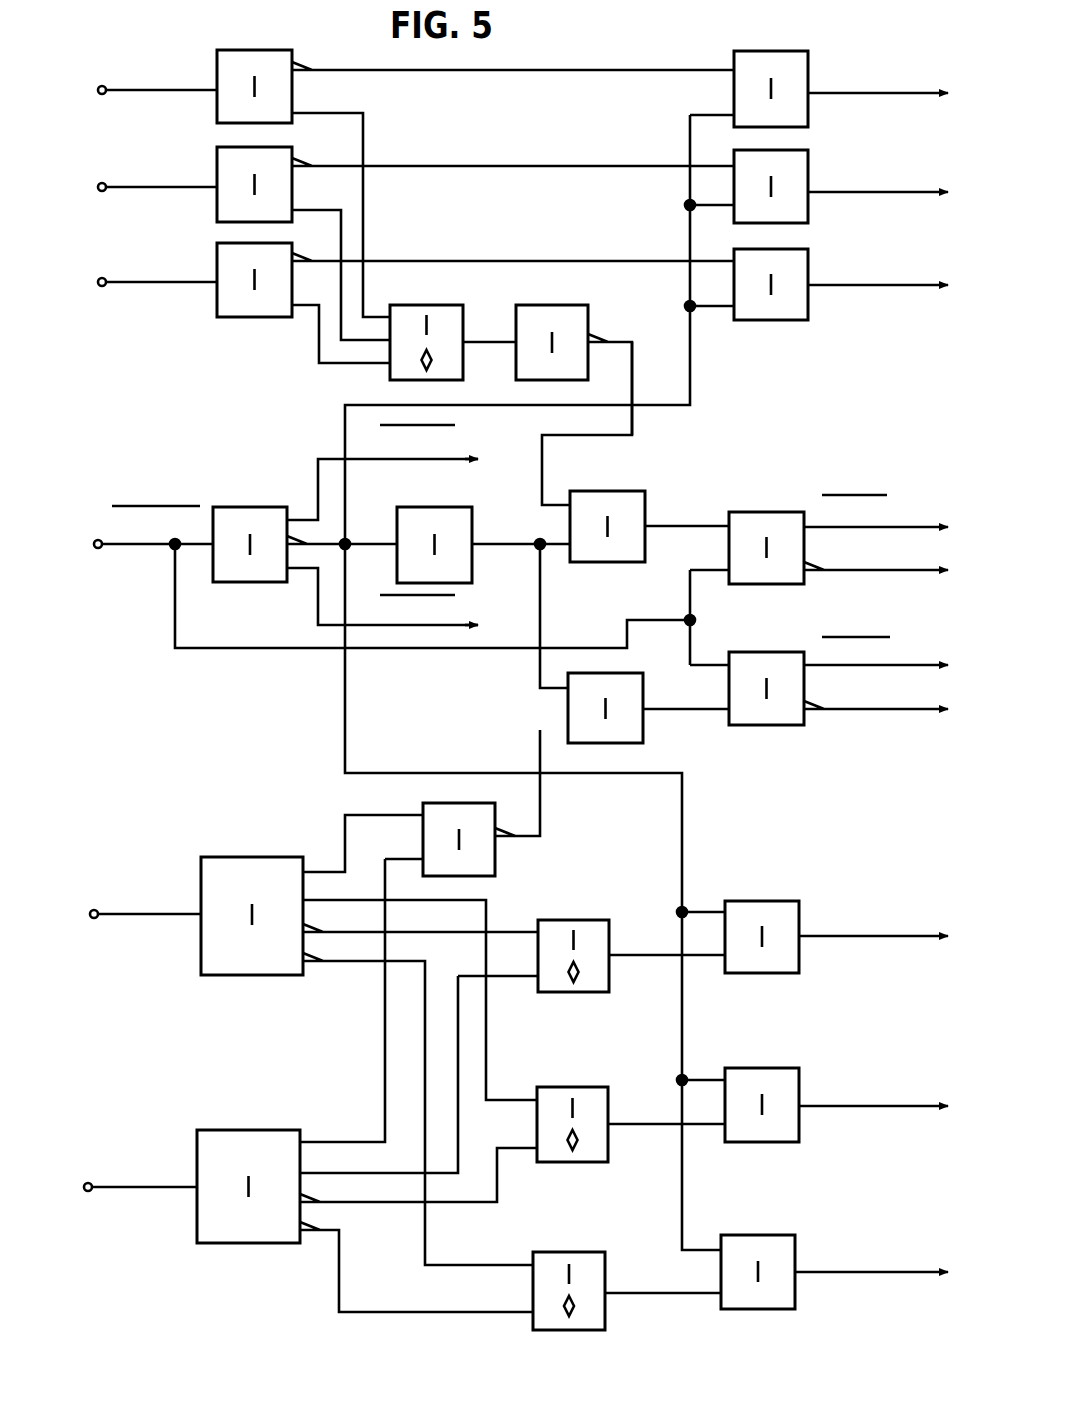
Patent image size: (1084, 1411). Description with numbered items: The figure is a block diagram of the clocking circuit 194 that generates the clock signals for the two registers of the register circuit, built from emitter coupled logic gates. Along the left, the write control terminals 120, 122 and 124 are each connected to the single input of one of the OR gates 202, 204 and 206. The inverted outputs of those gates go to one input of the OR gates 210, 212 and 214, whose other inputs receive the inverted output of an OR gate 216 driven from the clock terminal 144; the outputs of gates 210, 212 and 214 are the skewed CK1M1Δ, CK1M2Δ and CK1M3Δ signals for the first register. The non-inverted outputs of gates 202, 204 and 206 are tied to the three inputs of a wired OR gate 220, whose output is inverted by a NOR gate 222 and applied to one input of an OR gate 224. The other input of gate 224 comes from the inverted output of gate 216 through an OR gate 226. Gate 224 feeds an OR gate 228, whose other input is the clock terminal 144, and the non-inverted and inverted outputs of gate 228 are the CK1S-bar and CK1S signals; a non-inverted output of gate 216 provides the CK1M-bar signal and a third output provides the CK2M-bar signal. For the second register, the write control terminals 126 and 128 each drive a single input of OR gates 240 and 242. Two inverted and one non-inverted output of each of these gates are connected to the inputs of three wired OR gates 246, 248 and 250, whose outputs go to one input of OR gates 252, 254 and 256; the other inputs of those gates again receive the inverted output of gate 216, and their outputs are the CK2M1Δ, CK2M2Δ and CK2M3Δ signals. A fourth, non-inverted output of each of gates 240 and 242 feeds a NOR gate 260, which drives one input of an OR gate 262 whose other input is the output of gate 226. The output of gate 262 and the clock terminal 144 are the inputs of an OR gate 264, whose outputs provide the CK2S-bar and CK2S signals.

The clocking circuit 194 is at (268, 1278).
The write control terminal 120 is at (101, 94).
The write control terminal 122 is at (101, 191).
The write control terminal 124 is at (101, 286).
The write control terminal 126 is at (93, 918).
The write control terminal 128 is at (87, 1191).
The clock terminal 144 is at (97, 548).
The OR gate 202 is at (292, 90).
The OR gate 204 is at (292, 187).
The OR gate 206 is at (275, 317).
The OR gate 210 is at (734, 93).
The OR gate 212 is at (734, 183).
The OR gate 214 is at (785, 320).
The OR gate 216 is at (262, 507).
The wired OR gate 220 is at (448, 305).
The NOR gate 222 is at (535, 305).
The OR gate 224 is at (607, 491).
The OR gate 226 is at (448, 507).
The OR gate 228 is at (740, 512).
The OR gate 240 is at (252, 857).
The OR gate 242 is at (272, 1130).
The wired OR gate 246 is at (598, 992).
The wired OR gate 248 is at (585, 1162).
The wired OR gate 250 is at (575, 1252).
The OR gate 252 is at (780, 901).
The OR gate 254 is at (775, 1068).
The OR gate 256 is at (775, 1235).
The NOR gate 260 is at (495, 855).
The OR gate 262 is at (568, 709).
The OR gate 264 is at (785, 725).